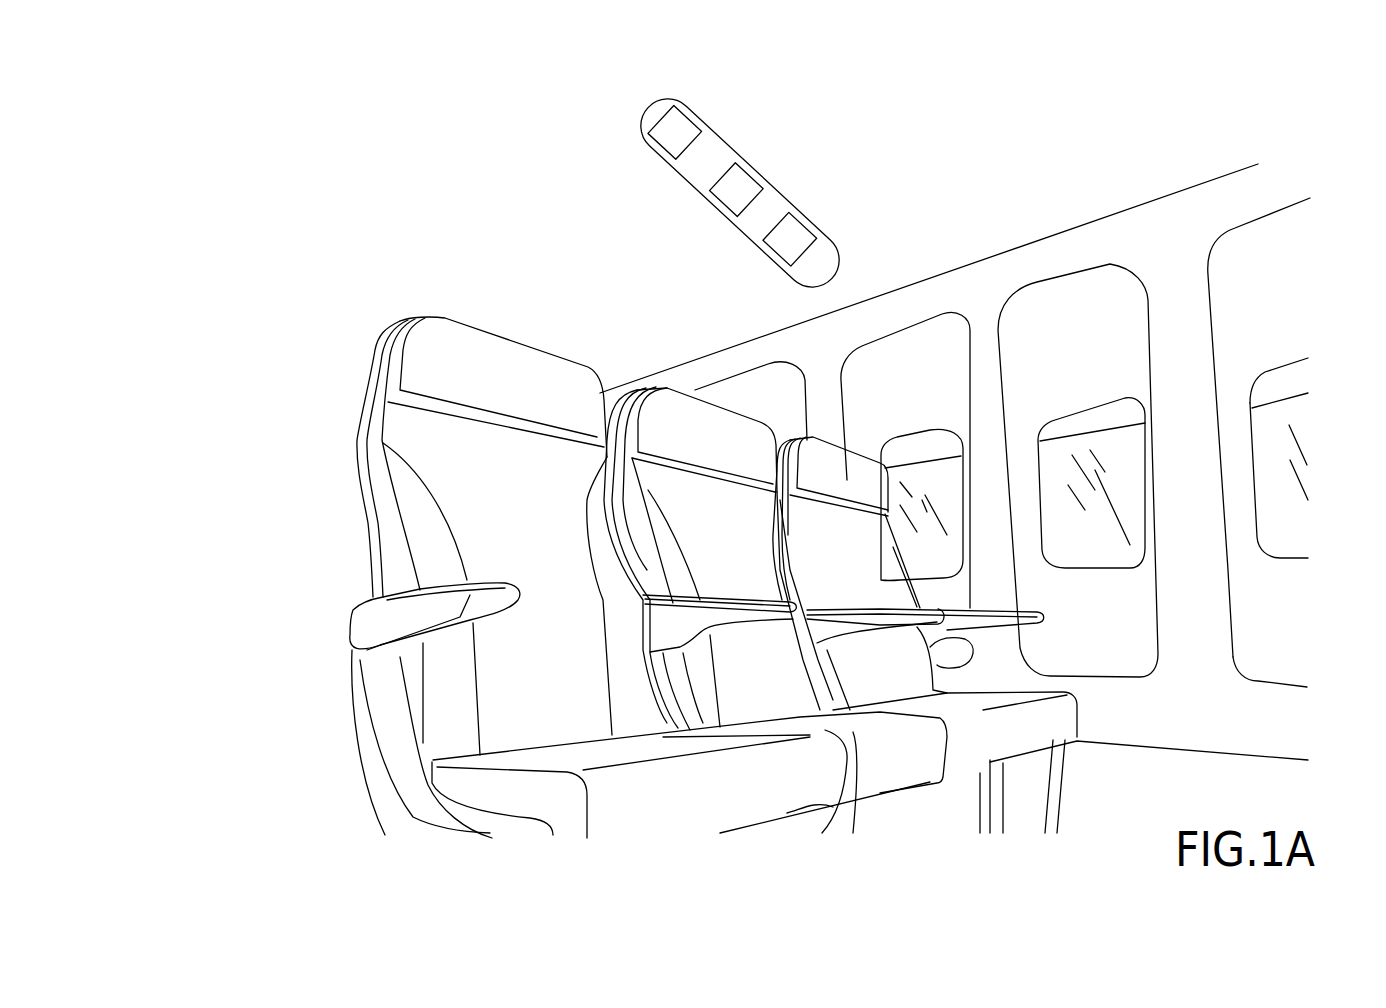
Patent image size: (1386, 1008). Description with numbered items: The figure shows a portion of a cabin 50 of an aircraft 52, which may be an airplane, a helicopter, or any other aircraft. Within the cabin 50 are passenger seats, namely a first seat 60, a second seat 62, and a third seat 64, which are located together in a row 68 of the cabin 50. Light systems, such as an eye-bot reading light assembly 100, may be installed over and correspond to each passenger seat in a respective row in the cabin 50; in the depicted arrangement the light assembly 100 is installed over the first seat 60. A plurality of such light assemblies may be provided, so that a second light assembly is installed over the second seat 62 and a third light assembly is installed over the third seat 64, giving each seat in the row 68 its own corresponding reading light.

The cabin 50 is at (343, 257).
The aircraft 52 is at (1178, 208).
The first seat 60 is at (475, 392).
The second seat 62 is at (685, 430).
The third seat 64 is at (875, 475).
The row 68 is at (347, 575).
The eye-bot reading light assembly 100 is at (675, 138).